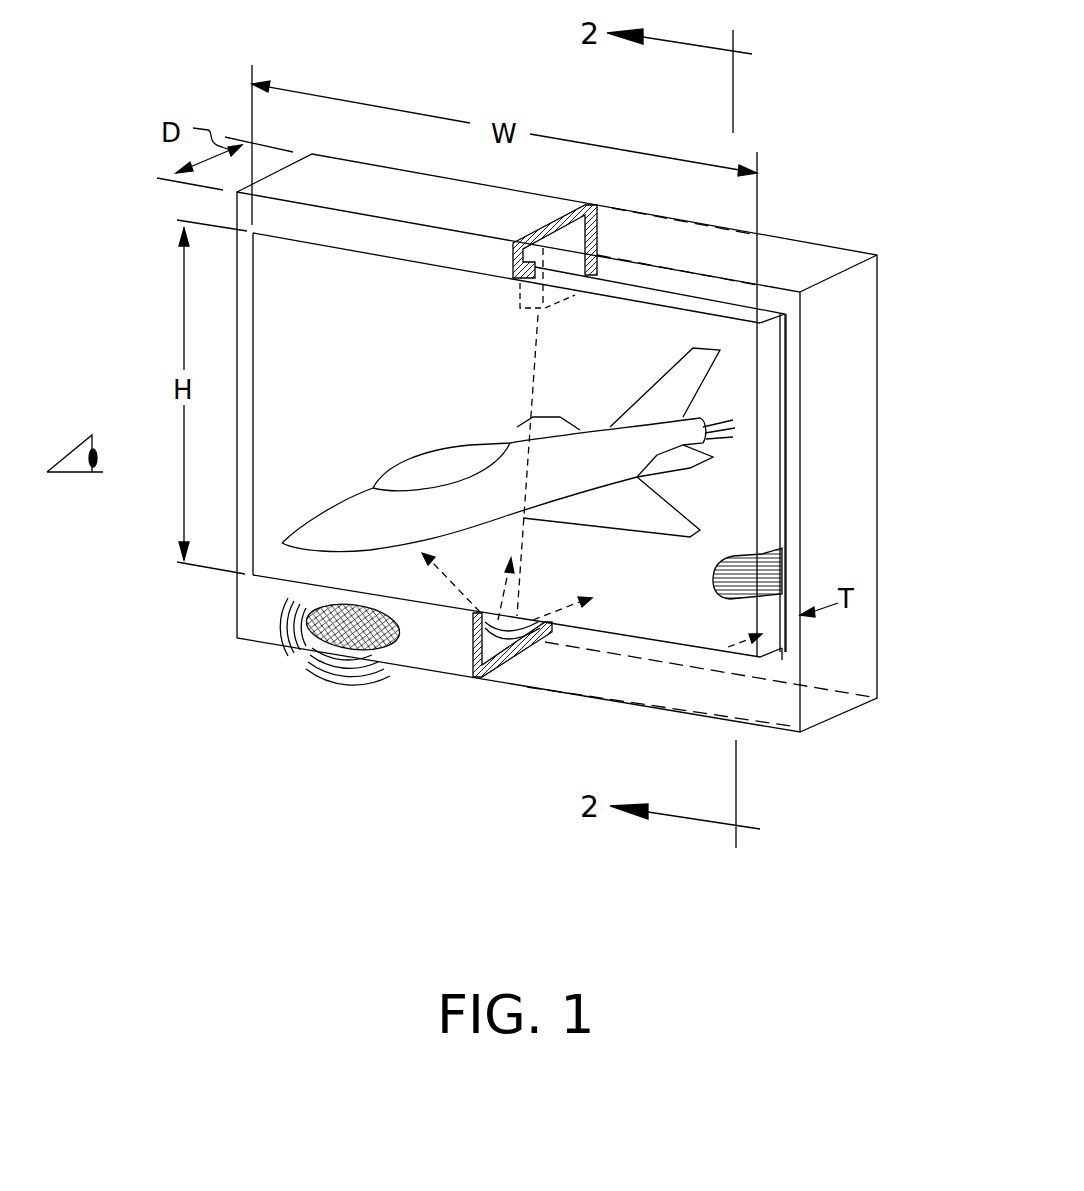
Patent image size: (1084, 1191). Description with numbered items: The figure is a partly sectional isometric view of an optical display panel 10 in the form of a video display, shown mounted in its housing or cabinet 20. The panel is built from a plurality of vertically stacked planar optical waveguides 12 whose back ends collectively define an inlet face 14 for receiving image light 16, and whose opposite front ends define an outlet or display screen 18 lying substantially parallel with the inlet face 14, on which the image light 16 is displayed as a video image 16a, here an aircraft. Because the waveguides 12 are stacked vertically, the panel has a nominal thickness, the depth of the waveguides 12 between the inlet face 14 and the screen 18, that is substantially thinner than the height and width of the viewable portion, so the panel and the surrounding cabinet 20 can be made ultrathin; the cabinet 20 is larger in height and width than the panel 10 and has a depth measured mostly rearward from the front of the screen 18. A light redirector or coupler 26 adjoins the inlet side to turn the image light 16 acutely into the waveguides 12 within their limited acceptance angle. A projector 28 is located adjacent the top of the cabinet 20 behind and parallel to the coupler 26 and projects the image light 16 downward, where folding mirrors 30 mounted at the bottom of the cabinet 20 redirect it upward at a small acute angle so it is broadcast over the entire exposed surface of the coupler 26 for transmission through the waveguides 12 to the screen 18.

The optical display panel 10 is at (800, 487).
The planar optical waveguides 12 is at (728, 577).
The inlet face 14 is at (800, 409).
The image light 16 is at (537, 378).
The video image 16a is at (483, 443).
The display screen 18 is at (347, 313).
The cabinet 20 is at (270, 600).
The light coupler 26 is at (800, 447).
The projector 28 is at (576, 240).
The folding mirrors 30 is at (500, 640).